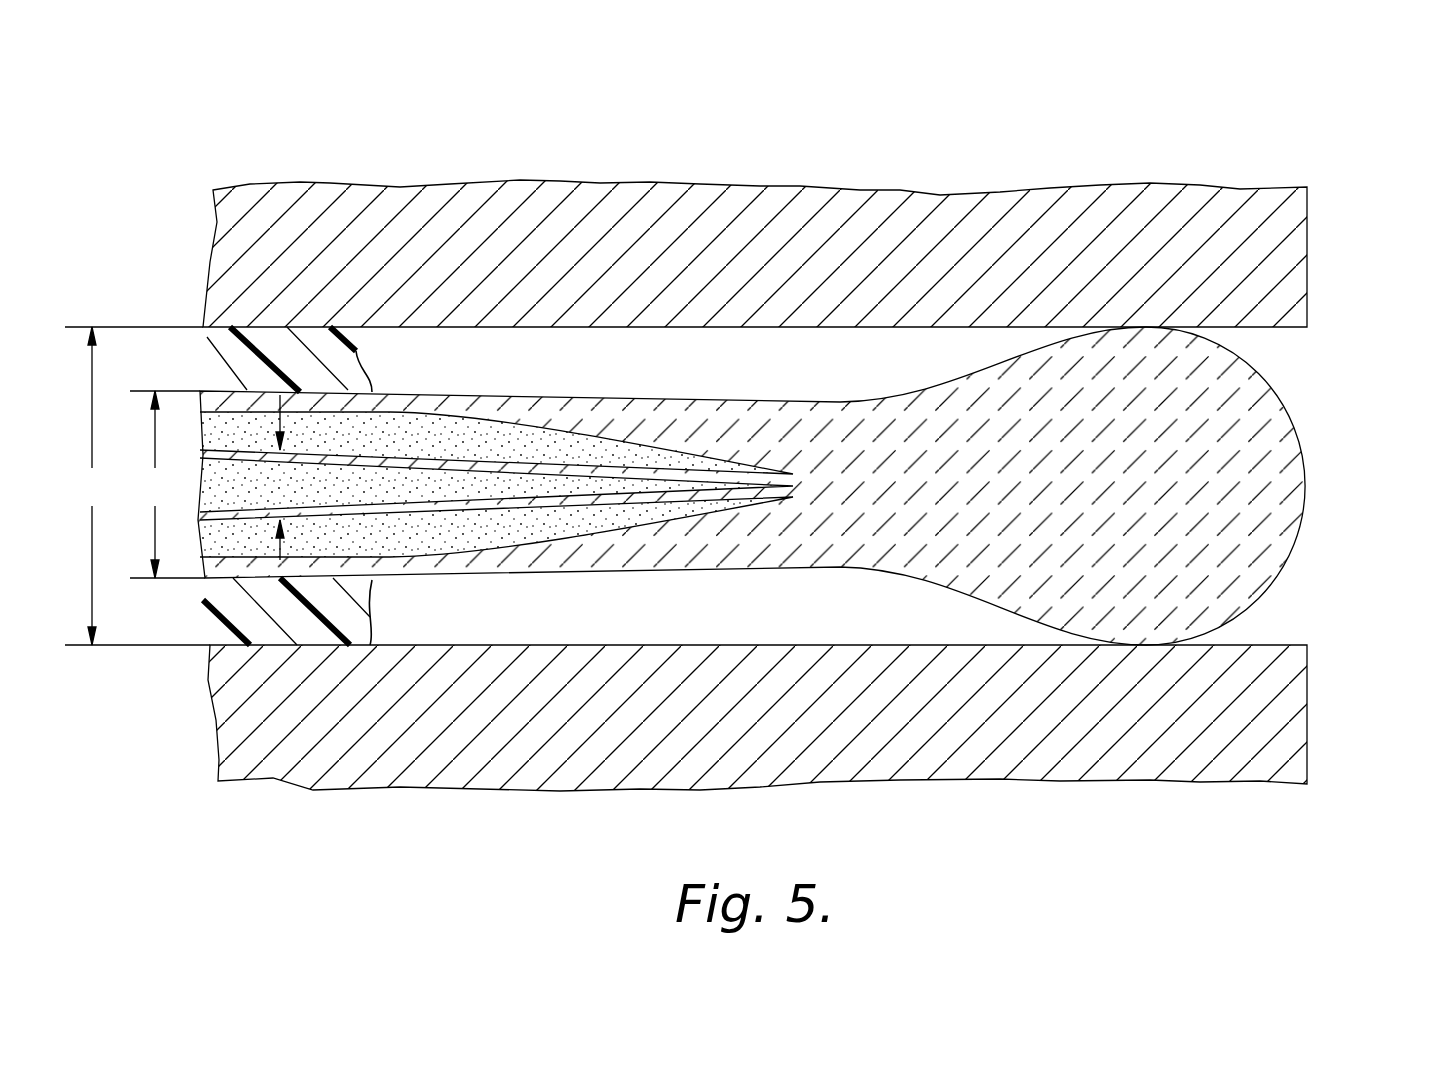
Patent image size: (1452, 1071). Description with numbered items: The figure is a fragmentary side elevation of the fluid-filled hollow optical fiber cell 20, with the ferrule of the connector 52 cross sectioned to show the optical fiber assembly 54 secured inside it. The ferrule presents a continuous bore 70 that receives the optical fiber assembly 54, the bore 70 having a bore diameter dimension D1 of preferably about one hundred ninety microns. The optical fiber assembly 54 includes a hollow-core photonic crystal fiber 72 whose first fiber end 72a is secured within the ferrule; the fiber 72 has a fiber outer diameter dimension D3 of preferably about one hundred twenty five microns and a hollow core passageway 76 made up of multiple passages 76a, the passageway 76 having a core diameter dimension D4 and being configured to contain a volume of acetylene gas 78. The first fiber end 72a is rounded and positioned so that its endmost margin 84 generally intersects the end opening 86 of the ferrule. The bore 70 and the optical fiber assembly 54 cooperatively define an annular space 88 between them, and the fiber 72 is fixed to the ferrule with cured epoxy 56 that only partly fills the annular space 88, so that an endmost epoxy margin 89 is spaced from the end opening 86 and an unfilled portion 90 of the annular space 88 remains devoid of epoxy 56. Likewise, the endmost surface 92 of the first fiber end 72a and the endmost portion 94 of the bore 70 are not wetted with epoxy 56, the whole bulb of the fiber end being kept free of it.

The optical fiber cell 20 is at (1151, 145).
The connector 52 is at (270, 212).
The optical fiber assembly 54 is at (513, 405).
The cured epoxy 56 is at (232, 347).
The bore 70 is at (652, 332).
The hollow-core photonic crystal fiber 72 is at (457, 405).
The first fiber end 72a is at (1330, 336).
The hollow core passageway 76 is at (726, 535).
The passages 76a is at (394, 406).
The acetylene gas 78 is at (552, 437).
The endmost margin 84 is at (1325, 467).
The end opening 86 is at (1307, 590).
The annular space 88 is at (935, 348).
The endmost epoxy margin 89 is at (360, 355).
The unfilled portion 90 is at (773, 348).
The endmost surface 92 is at (1266, 592).
The endmost portion 94 is at (1310, 360).
The bore diameter dimension D1 is at (92, 486).
The fiber outer diameter dimension D3 is at (153, 484).
The core diameter dimension D4 is at (280, 477).